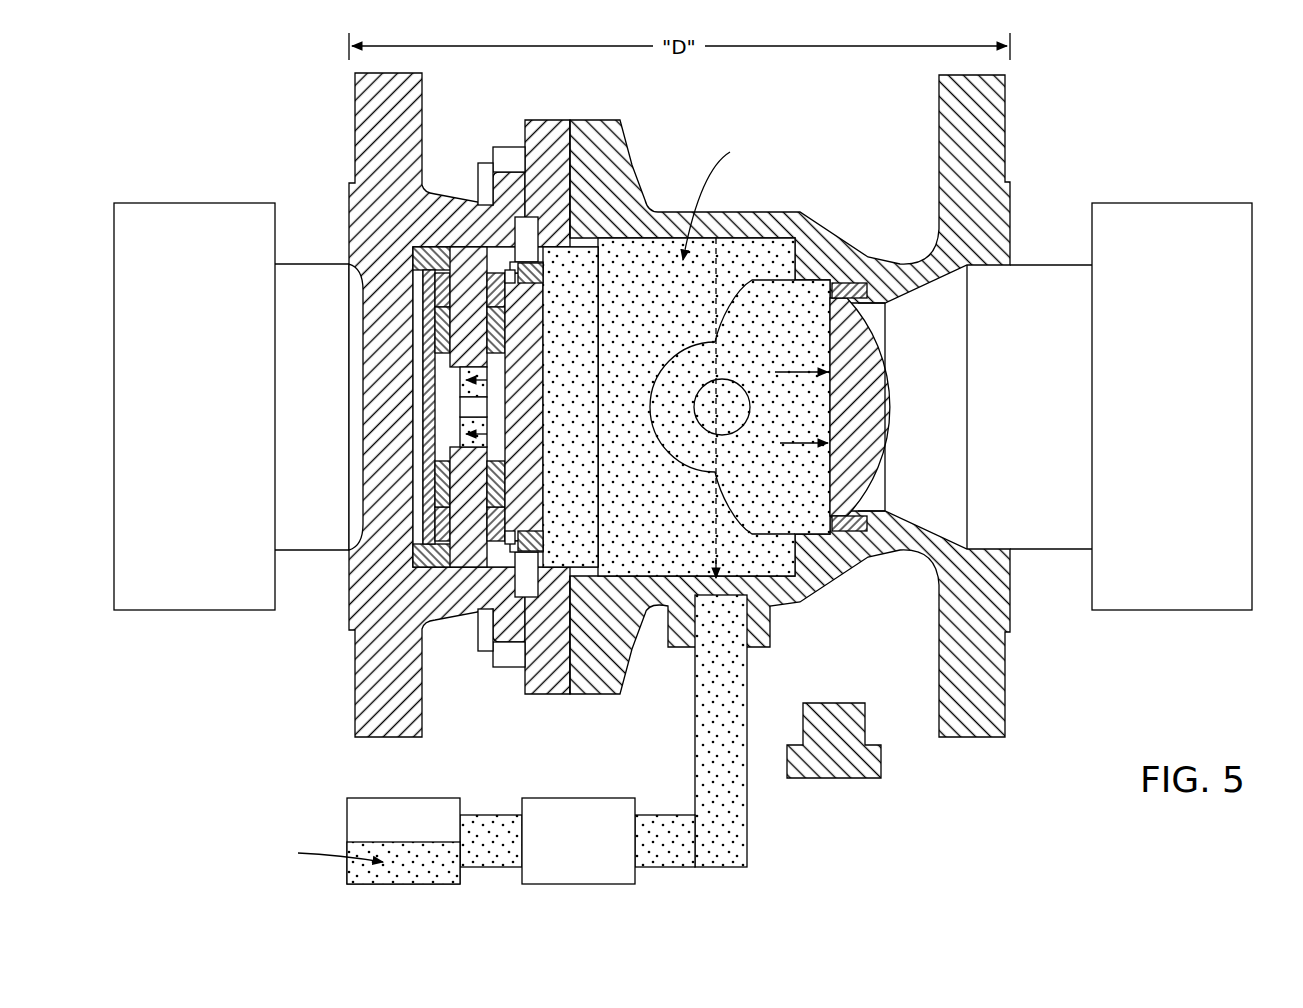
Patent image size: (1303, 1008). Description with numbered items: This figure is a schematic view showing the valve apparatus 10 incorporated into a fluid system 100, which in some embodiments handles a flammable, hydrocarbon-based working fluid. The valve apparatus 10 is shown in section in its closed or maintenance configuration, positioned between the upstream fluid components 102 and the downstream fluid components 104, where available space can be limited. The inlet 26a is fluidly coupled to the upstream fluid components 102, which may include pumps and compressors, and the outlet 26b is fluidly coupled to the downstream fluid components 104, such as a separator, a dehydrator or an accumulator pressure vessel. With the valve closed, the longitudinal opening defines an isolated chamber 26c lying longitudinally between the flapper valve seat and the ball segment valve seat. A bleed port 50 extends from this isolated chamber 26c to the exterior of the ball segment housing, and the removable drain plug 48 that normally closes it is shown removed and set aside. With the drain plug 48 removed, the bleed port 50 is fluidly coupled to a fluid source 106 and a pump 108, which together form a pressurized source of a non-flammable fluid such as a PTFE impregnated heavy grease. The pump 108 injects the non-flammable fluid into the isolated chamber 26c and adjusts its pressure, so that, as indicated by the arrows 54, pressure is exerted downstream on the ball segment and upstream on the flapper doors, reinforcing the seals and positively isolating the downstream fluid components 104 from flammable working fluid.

The valve apparatus 10 is at (324, 118).
The fluid system 100 is at (1192, 115).
The upstream fluid components 102 is at (216, 420).
The downstream fluid components 104 is at (1194, 420).
The fluid source 106 is at (366, 797).
The pump 108 is at (600, 852).
The inlet 26a is at (350, 466).
The outlet 26b is at (944, 480).
The isolated chamber 26c is at (684, 529).
The bleed port 50 is at (715, 342).
The arrows 54 is at (483, 200).
The drain plug 48 is at (868, 794).